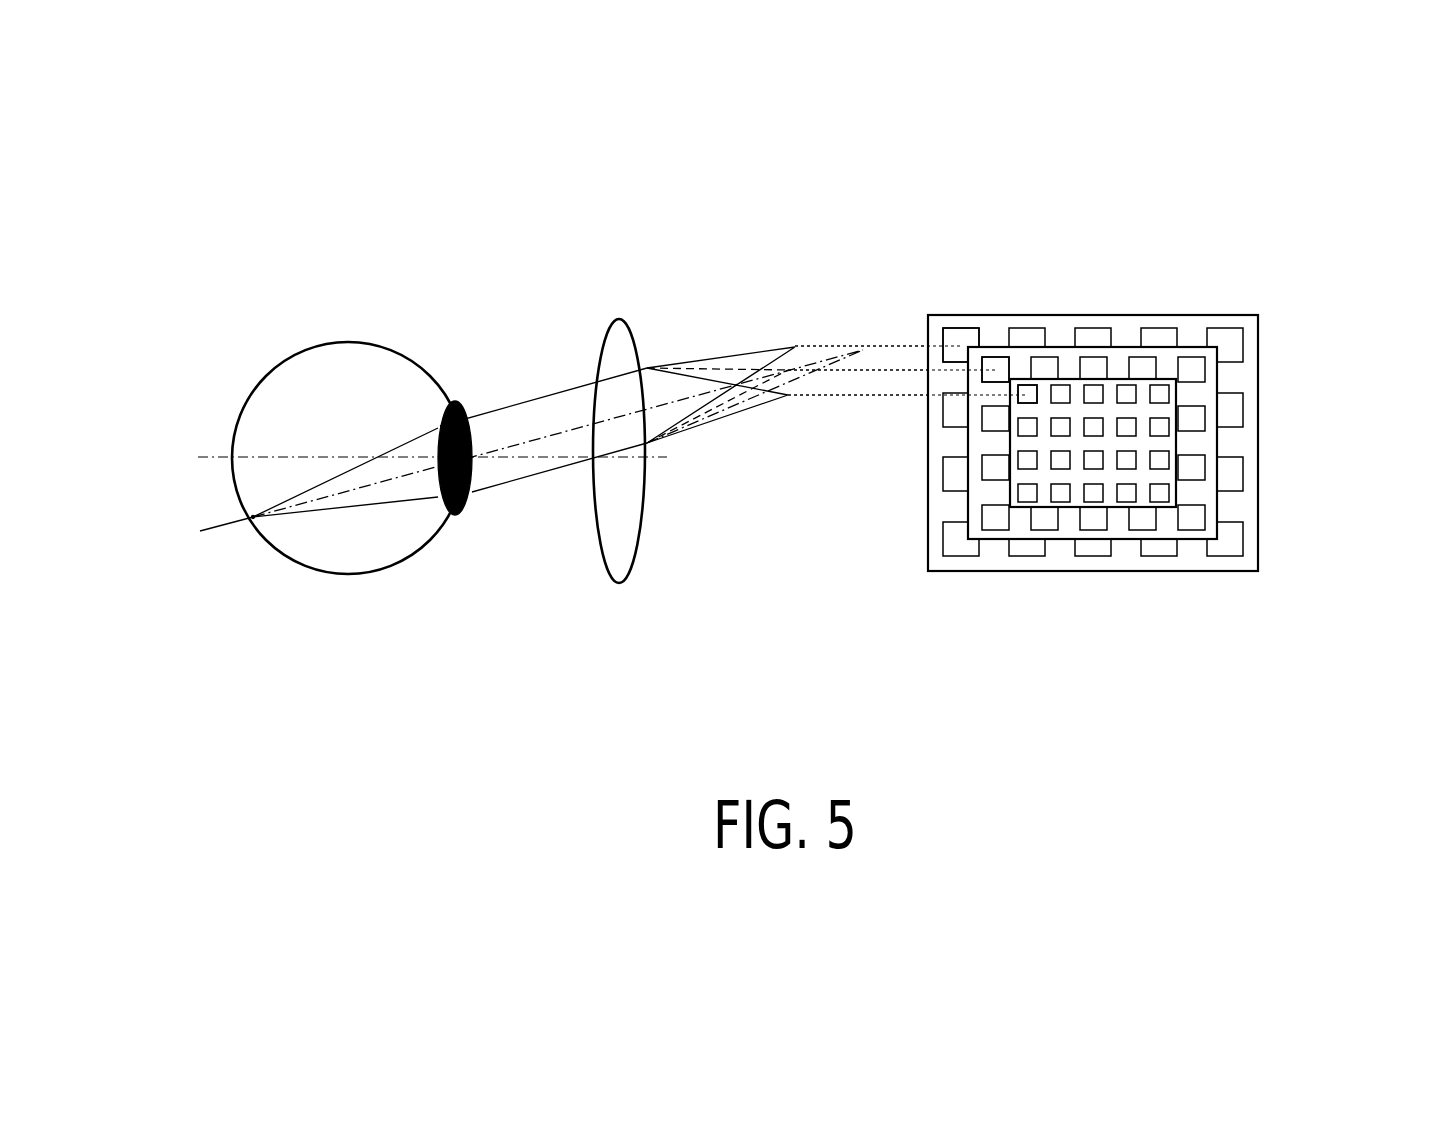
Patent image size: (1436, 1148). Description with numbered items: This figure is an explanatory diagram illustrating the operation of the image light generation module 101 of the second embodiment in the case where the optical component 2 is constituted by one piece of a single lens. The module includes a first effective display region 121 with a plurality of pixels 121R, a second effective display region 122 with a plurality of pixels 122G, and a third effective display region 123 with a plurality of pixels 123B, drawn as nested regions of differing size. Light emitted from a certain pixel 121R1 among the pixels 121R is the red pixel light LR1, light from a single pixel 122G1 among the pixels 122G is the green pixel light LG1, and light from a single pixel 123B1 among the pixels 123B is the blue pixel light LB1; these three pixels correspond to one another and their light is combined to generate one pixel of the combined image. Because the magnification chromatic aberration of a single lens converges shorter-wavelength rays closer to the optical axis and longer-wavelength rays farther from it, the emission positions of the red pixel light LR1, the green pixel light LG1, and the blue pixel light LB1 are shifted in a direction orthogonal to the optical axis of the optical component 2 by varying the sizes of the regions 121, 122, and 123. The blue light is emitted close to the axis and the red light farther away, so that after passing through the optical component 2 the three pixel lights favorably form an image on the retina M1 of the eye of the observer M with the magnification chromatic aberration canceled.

The image light generation module 101 is at (1080, 415).
The first effective display region 121 is at (1093, 425).
The second effective display region 122 is at (1141, 410).
The third effective display region 123 is at (1188, 395).
The pixels 121R is at (953, 550).
The pixels 122G is at (997, 522).
The pixels 123B is at (1027, 493).
The pixel 121R1 is at (897, 264).
The pixel 122G1 is at (959, 274).
The pixel 123B1 is at (1042, 284).
The red pixel light LR1 is at (683, 362).
The green pixel light LG1 is at (727, 367).
The blue pixel light LB1 is at (750, 412).
The observer M is at (299, 345).
The retina M1 is at (247, 499).
The optical component 2 is at (598, 527).